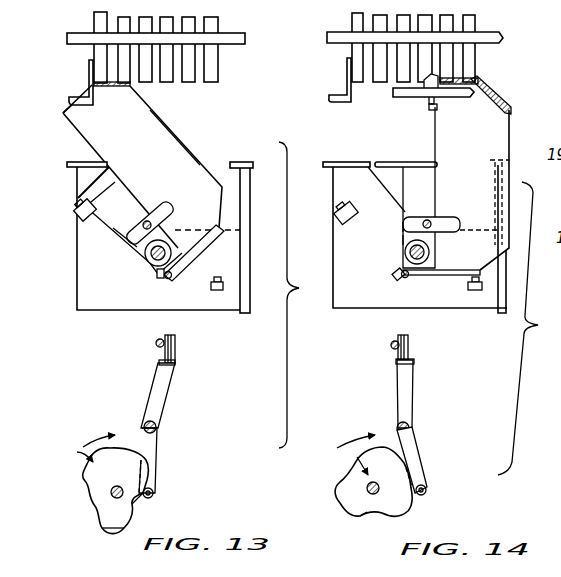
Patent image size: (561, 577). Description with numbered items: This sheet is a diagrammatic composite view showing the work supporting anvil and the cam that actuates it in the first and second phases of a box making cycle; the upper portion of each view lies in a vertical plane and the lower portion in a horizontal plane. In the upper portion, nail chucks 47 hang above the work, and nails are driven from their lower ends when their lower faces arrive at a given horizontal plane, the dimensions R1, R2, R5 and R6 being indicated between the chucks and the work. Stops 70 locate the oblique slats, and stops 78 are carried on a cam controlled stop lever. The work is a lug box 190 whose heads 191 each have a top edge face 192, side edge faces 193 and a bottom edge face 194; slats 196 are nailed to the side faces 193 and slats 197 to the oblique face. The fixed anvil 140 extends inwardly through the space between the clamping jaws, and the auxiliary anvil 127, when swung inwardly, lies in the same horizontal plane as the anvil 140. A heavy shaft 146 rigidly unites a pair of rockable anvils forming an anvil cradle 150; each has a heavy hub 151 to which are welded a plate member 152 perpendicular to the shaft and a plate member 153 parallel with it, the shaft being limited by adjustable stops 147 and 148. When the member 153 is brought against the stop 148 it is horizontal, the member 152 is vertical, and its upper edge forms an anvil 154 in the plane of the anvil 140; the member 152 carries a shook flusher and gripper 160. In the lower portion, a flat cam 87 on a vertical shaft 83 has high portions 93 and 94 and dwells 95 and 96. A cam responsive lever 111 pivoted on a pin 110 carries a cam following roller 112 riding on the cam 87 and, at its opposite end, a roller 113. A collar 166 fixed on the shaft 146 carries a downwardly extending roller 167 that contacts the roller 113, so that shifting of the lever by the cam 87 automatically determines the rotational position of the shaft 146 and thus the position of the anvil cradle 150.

In FIG. 13, the nail chucks 47 is at (190, 69).
In FIG. 14, the nail chucks 47 is at (383, 73).
In FIG. 13, the reference dimension R1 is at (98, 53).
In FIG. 13, the reference dimension R2 is at (125, 71).
In FIG. 14, the reference dimension R5 is at (447, 25).
In FIG. 14, the reference dimension R6 is at (472, 53).
In FIG. 13, the stops 70 is at (88, 61).
In FIG. 14, the stops 70 is at (348, 64).
In FIG. 14, the stops 78 is at (438, 99).
In FIG. 13, the vertical shaft 83 is at (117, 485).
In FIG. 14, the vertical shaft 83 is at (387, 481).
In FIG. 13, the flat cam 87 is at (82, 448).
In FIG. 14, the flat cam 87 is at (356, 455).
In FIG. 13, the high portion 93 is at (143, 468).
In FIG. 14, the high portion 93 is at (407, 503).
In FIG. 13, the high portion 94 is at (115, 523).
In FIG. 14, the high portion 94 is at (343, 500).
In FIG. 13, the dwell 95 is at (143, 507).
In FIG. 14, the dwell 95 is at (368, 517).
In FIG. 13, the dwell 96 is at (92, 502).
In FIG. 13, the pin 110 is at (157, 427).
In FIG. 14, the pin 110 is at (408, 428).
In FIG. 13, the cam responsive lever 111 is at (165, 388).
In FIG. 14, the cam responsive lever 111 is at (408, 384).
In FIG. 13, the cam following roller 112 is at (155, 493).
In FIG. 14, the cam following roller 112 is at (425, 492).
In FIG. 13, the roller 113 is at (177, 348).
In FIG. 14, the roller 113 is at (410, 346).
In FIG. 13, the auxiliary anvils 127 is at (238, 157).
In FIG. 13, the fixed anvil 140 is at (80, 160).
In FIG. 14, the fixed anvil 140 is at (338, 159).
In FIG. 13, the heavy shaft 146 is at (155, 258).
In FIG. 14, the heavy shaft 146 is at (408, 253).
In FIG. 13, the adjustable stop 147 is at (75, 226).
In FIG. 14, the adjustable stop 147 is at (333, 223).
In FIG. 13, the adjustable stop 148 is at (223, 285).
In FIG. 14, the adjustable stop 148 is at (475, 290).
In FIG. 13, the anvil cradle 150 is at (118, 232).
In FIG. 14, the anvil cradle 150 is at (400, 228).
In FIG. 14, the heavy hub 151 is at (407, 237).
In FIG. 13, the plate member 152 is at (115, 188).
In FIG. 14, the plate member 152 is at (427, 192).
In FIG. 13, the plate member 153 is at (203, 246).
In FIG. 14, the plate member 153 is at (445, 275).
In FIG. 14, the anvil 154 is at (408, 160).
In FIG. 13, the shook flusher and gripper 160 is at (155, 208).
In FIG. 14, the shook flusher and gripper 160 is at (442, 216).
In FIG. 13, the collar 166 is at (162, 240).
In FIG. 14, the collar 166 is at (428, 250).
In FIG. 13, the roller 167 is at (159, 341).
In FIG. 14, the roller 167 is at (399, 270).
In FIG. 13, the lug box 190 is at (190, 147).
In FIG. 13, the heads 191 is at (150, 160).
In FIG. 14, the heads 191 is at (472, 150).
In FIG. 13, the top edge face 192 is at (70, 127).
In FIG. 13, the side edge faces 193 is at (72, 107).
In FIG. 14, the side edge faces 193 is at (467, 80).
In FIG. 13, the bottom edge face 194 is at (157, 110).
In FIG. 14, the bottom edge face 194 is at (510, 126).
In FIG. 14, the slats 196 is at (423, 87).
In FIG. 13, the slats 197 is at (113, 88).
In FIG. 14, the slats 197 is at (493, 90).